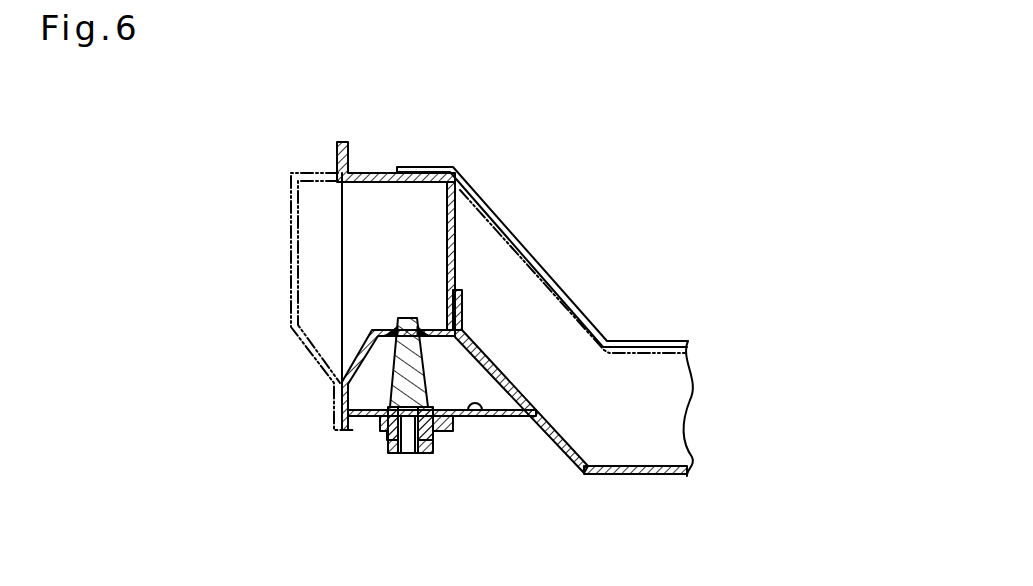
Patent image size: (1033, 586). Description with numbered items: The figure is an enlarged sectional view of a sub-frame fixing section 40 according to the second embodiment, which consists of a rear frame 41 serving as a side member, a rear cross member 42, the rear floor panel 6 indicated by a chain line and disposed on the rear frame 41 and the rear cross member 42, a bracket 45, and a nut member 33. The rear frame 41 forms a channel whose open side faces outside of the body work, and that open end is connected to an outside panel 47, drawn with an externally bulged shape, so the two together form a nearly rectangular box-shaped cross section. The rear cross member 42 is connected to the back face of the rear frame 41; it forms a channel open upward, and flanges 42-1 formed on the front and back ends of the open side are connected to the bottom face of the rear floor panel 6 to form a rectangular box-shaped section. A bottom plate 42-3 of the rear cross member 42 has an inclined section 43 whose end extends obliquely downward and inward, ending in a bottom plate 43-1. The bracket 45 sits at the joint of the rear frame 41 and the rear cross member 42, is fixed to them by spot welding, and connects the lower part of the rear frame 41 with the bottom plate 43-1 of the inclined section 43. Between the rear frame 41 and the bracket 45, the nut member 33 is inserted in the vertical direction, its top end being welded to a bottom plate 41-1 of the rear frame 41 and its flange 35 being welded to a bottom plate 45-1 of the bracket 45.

The rear floor panel 6 is at (498, 213).
The nut member 33 is at (390, 460).
The flange 35 is at (377, 432).
The sub-frame fixing section 40 is at (222, 216).
The rear frame 41 is at (372, 172).
The bottom plate of the rear frame 41-1 is at (392, 329).
The rear cross member 42 is at (582, 350).
The flange 42-1 is at (655, 352).
The bottom plate of the rear cross member 42-3 is at (647, 466).
The inclined section 43 is at (523, 290).
The bottom plate of the inclined section 43-1 is at (505, 375).
The bracket 45 is at (512, 422).
The bottom plate of the bracket 45-1 is at (480, 418).
The outside panel 47 is at (287, 238).